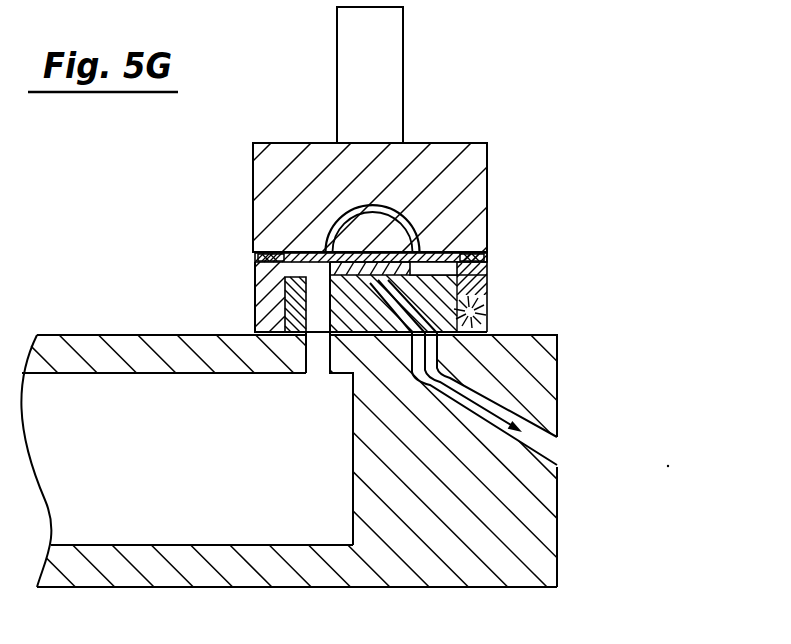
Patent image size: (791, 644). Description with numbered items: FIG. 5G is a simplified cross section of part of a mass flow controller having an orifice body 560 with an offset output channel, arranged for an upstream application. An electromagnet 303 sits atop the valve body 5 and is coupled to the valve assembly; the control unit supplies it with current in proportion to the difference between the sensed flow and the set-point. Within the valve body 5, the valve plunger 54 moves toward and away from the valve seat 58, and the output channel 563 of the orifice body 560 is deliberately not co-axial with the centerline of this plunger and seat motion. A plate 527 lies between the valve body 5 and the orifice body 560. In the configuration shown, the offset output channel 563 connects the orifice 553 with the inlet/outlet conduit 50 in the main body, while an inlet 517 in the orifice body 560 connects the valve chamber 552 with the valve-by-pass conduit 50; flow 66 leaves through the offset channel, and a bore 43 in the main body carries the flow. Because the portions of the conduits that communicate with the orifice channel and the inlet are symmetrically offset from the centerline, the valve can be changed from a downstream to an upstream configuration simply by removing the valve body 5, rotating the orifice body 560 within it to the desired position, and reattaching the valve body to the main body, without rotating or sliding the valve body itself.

The electromagnet 303 is at (403, 48).
The valve body 5 is at (487, 182).
The valve plunger 54 is at (385, 223).
The valve seat 58 is at (350, 268).
The valve chamber 552 is at (300, 268).
The inlet 517 is at (297, 302).
The inlet/outlet conduit 50 is at (308, 352).
The plate 527 is at (482, 262).
The offset output channel 563 is at (410, 331).
The orifice body 560 is at (450, 326).
The outlet passage 66 is at (508, 414).
The orifice 553 is at (364, 280).
The tube bore 43 is at (318, 372).